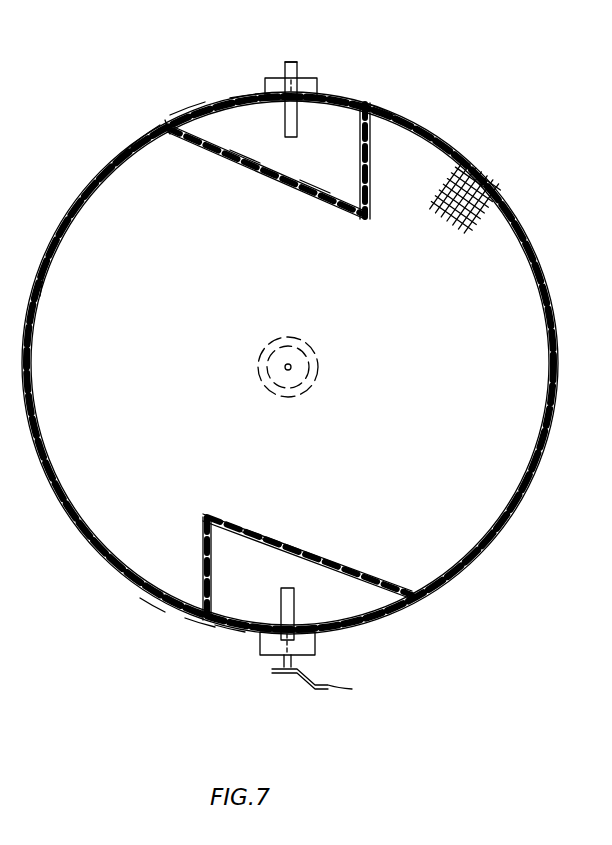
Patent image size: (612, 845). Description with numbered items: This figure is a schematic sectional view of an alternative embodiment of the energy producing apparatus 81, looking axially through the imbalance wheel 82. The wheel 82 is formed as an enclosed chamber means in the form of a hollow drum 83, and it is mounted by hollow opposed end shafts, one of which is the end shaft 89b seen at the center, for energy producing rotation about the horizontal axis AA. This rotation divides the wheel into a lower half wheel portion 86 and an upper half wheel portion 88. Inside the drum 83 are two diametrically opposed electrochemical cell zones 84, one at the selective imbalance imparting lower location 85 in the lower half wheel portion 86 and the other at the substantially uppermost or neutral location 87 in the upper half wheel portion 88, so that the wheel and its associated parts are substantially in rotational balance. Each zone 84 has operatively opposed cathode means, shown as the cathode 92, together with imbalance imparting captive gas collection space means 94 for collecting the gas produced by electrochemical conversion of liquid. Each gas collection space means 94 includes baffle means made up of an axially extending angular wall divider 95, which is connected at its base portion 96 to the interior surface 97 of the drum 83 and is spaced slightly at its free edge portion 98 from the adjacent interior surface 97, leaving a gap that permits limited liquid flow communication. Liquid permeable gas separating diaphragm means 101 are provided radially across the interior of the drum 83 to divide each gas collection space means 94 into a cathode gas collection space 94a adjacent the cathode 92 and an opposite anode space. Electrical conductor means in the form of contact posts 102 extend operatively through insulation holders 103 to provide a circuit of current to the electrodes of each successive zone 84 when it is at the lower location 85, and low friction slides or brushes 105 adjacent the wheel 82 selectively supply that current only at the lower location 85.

The energy producing apparatus 81 is at (432, 105).
The imbalance wheel 82 is at (80, 190).
The hollow drum 83 is at (115, 160).
The electrochemical cell zone 84 is at (242, 140).
The lower location 85 is at (225, 634).
The lower half wheel portion 86 is at (153, 600).
The neutral location 87 is at (249, 95).
The upper half wheel portion 88 is at (188, 100).
The hollow end shaft 89b is at (262, 352).
The cathode 92 is at (285, 120).
The gas collection space means 94 is at (200, 162).
The cathode gas collection space 94a is at (292, 163).
The angular wall divider 95 is at (371, 150).
The base portion 96 is at (368, 104).
The interior surface 97 is at (40, 296).
The free edge portion 98 is at (170, 128).
The gas separating diaphragm means 101 is at (488, 190).
The contact post 102 is at (297, 60).
The insulation holder 103 is at (303, 84).
The brush 105 is at (273, 671).
The horizontal axis AA is at (290, 366).